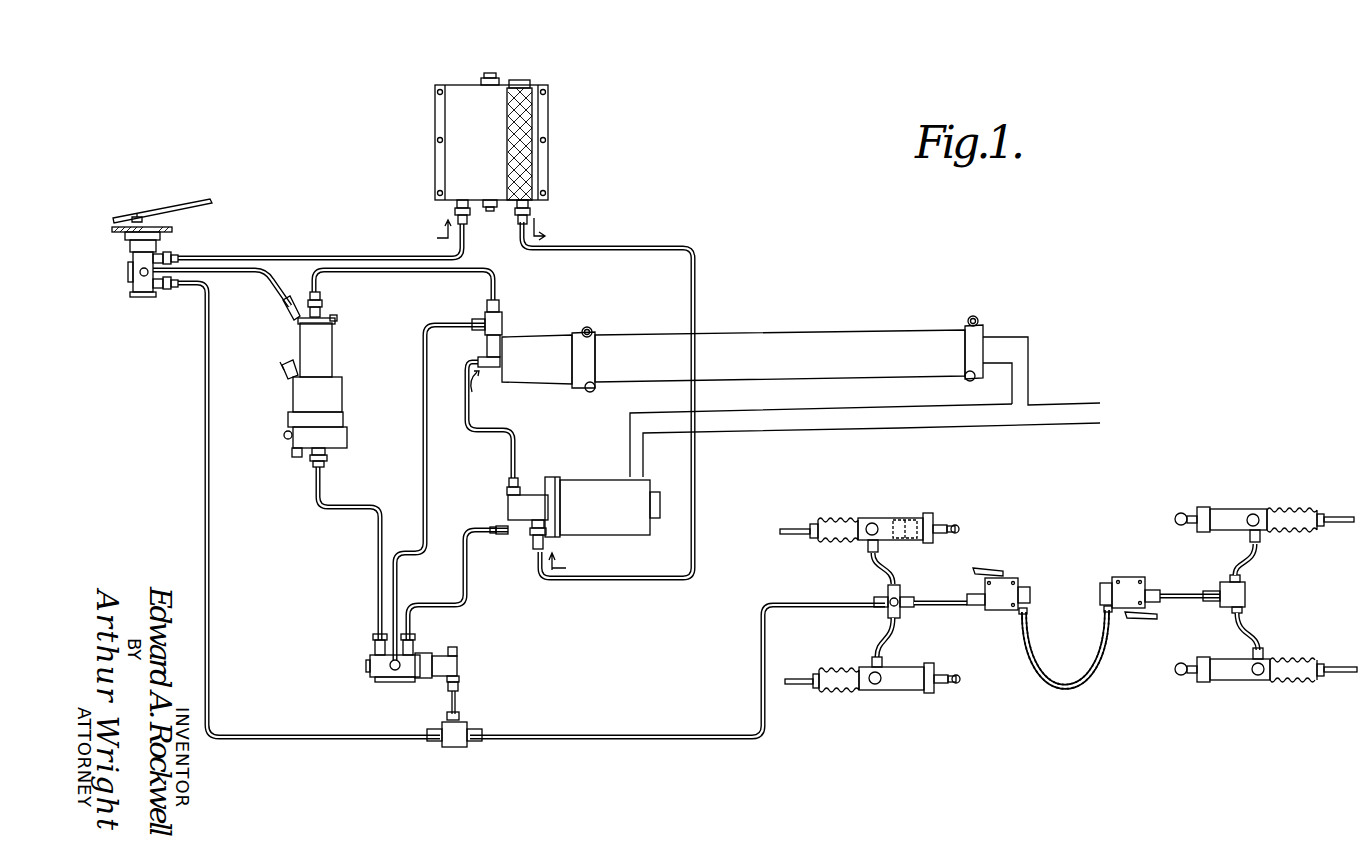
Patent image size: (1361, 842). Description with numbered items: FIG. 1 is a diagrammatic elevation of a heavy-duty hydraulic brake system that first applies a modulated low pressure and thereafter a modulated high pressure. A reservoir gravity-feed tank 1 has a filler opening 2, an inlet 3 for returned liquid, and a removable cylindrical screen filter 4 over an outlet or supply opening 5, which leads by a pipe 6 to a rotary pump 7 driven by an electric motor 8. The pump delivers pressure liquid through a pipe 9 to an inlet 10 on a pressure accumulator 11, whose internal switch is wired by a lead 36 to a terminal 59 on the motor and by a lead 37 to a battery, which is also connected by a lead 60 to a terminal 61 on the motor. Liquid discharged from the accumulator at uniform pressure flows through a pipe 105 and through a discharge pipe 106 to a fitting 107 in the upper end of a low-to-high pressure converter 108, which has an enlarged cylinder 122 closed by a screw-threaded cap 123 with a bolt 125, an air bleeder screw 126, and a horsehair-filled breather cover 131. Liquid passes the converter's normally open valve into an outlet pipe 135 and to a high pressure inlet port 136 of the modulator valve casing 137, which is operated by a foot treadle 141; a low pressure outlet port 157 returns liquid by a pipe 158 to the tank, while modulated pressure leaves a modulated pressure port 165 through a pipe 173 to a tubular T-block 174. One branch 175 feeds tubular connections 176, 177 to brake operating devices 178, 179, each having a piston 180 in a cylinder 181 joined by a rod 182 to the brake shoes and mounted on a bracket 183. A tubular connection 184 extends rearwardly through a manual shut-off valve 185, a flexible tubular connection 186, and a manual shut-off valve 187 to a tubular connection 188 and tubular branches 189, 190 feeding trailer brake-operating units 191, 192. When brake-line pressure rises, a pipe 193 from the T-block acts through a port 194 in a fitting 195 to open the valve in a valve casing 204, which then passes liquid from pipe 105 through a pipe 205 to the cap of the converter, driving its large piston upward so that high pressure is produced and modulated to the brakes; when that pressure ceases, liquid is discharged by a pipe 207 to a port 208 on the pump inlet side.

The reservoir gravity-feed tank 1 is at (437, 155).
The filler opening 2 is at (492, 77).
The inlet 3 is at (468, 203).
The removable cylindrical screen filter 4 is at (532, 177).
The outlet or supply opening 5 is at (528, 208).
The pipe 6 is at (648, 247).
The rotary pump 7 is at (517, 507).
The electric motor 8 is at (601, 521).
The pipe 9 is at (505, 428).
The inlet 10 is at (495, 376).
The pressure accumulator 11 is at (613, 342).
The lead 36 is at (1012, 388).
The lead 37 is at (1030, 360).
The terminal 59 is at (628, 462).
The lead 60 is at (1061, 427).
The terminal 61 is at (645, 462).
The pipe 105 is at (423, 403).
The discharge pipe 106 is at (498, 301).
The fitting 107 is at (322, 303).
The low-to-high pressure converter 108 is at (317, 355).
The enlarged cylinder 122 is at (333, 402).
The screw-threaded cap 123 is at (342, 448).
The bolt 125 is at (286, 438).
The air bleeder screw 126 is at (298, 459).
The cover 131 is at (288, 378).
The outlet pipe 135 is at (254, 278).
The high pressure inlet port 136 is at (143, 276).
The modulator valve casing 137 is at (129, 273).
The foot treadle 141 is at (204, 202).
The low pressure outlet port 157 is at (162, 253).
The pipe 158 is at (230, 257).
The modulated pressure port 165 is at (163, 292).
The pipe 173 is at (211, 380).
The tubular T-block 174 is at (456, 748).
The branch 175 is at (583, 739).
The tubular connection 176 is at (872, 571).
The tubular connection 177 is at (878, 647).
The brake operating device 178 is at (883, 517).
The brake operating device 179 is at (903, 692).
The piston 180 is at (913, 523).
The cylinder 181 is at (906, 540).
The rod 182 is at (803, 513).
The bracket 183 is at (957, 527).
The tubular connection 184 is at (933, 605).
The manual shut-off valve 185 is at (1003, 577).
The flexible tubular connection 186 is at (1067, 685).
The manual shut-off valve 187 is at (1132, 617).
The tubular connection 188 is at (1186, 594).
The tubular branch 189 is at (1248, 565).
The tubular branch 190 is at (1253, 630).
The brake-operating unit 191 is at (1228, 516).
The brake-operating unit 192 is at (1227, 681).
The pipe 193 is at (460, 703).
The port 194 is at (460, 677).
The fitting 195 is at (438, 658).
The valve casing 204 is at (416, 679).
The pipe 205 is at (378, 612).
The pipe 207 is at (457, 607).
The port 208 is at (527, 538).